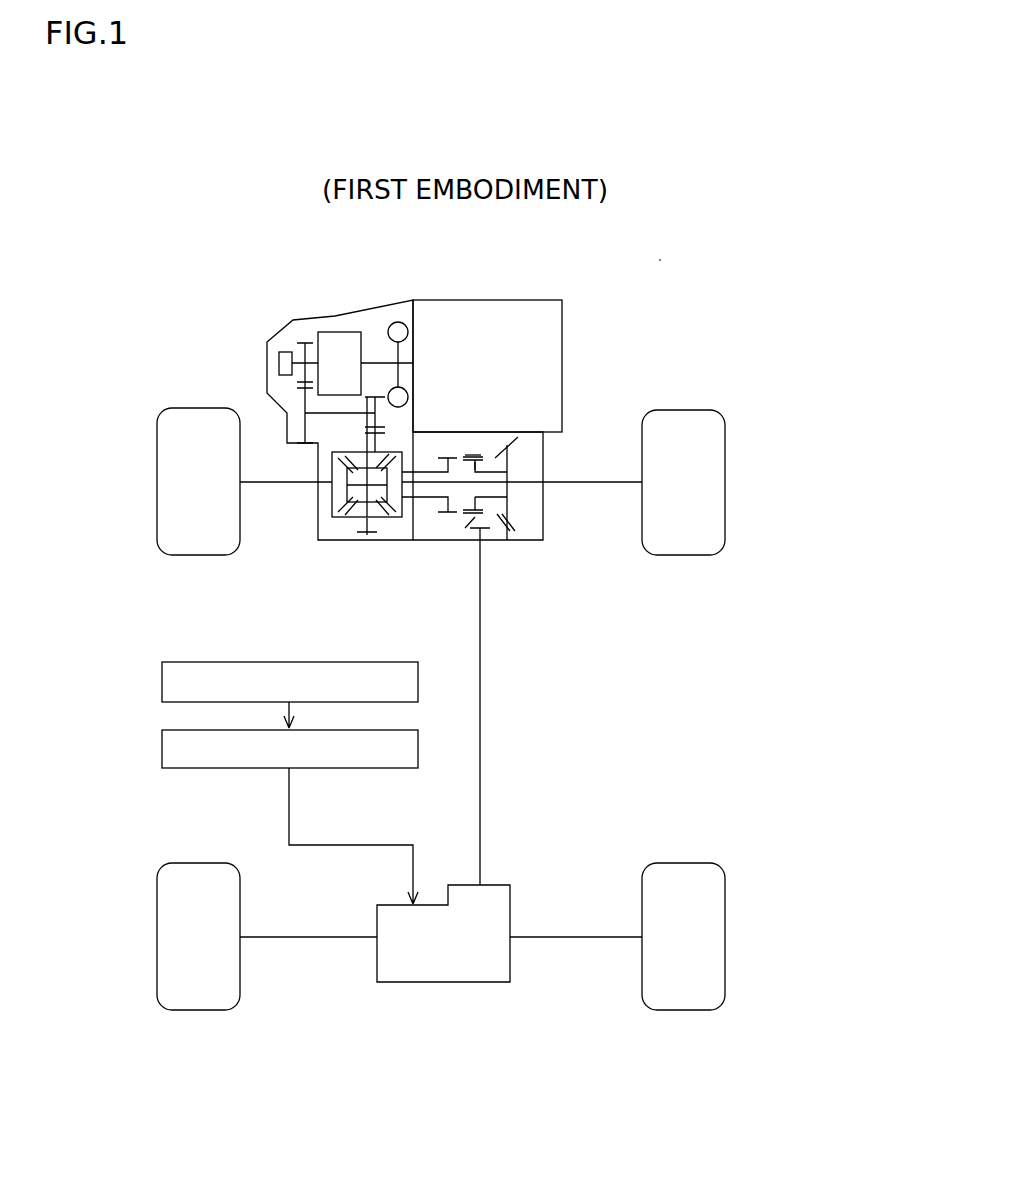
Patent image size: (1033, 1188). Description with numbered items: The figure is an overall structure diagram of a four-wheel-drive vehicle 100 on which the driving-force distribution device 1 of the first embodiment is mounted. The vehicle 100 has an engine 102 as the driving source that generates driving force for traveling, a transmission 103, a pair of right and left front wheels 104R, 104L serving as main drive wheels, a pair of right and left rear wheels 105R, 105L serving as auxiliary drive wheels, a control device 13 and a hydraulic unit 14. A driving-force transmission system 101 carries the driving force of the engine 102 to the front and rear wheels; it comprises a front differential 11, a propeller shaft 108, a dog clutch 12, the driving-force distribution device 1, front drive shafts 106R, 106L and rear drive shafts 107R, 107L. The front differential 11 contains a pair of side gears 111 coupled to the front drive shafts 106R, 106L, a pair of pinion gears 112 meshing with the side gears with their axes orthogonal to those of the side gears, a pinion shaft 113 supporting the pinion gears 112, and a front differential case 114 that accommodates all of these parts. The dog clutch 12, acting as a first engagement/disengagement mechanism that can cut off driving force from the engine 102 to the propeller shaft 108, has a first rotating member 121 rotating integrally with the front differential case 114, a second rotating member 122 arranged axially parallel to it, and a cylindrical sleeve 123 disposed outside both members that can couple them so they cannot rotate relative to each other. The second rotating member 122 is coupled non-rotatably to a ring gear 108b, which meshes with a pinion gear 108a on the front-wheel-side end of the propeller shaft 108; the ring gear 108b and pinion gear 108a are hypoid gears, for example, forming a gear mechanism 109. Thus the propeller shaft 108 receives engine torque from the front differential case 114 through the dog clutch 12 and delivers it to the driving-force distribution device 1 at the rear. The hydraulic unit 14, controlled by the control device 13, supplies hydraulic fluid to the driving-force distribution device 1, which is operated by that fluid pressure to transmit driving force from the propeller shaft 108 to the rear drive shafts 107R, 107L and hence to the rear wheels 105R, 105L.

The four-wheel-drive vehicle 100 is at (633, 270).
The driving-force transmission system 101 is at (598, 384).
The engine 102 is at (465, 299).
The transmission 103 is at (310, 322).
The left front wheel 104L is at (159, 483).
The right front wheel 104R is at (727, 478).
The left front drive shaft 106L is at (292, 481).
The right front drive shaft 106R is at (600, 480).
The front differential 11 is at (320, 526).
The side gear 111 is at (350, 486).
The pinion gear 112 is at (373, 468).
The pinion shaft 113 is at (355, 490).
The front differential case 114 is at (361, 500).
The dog clutch 12 is at (451, 531).
The first rotating member 121 is at (450, 457).
The second rotating member 122 is at (477, 468).
The cylindrical sleeve 123 is at (483, 455).
The propeller shaft 108 is at (482, 676).
The pinion gear 108a is at (503, 516).
The ring gear 108b is at (508, 507).
The gear mechanism 109 is at (531, 536).
The control device 13 is at (172, 662).
The hydraulic unit 14 is at (172, 730).
The driving-force distribution device 1 is at (497, 885).
The left rear wheel 105L is at (157, 938).
The right rear wheel 105R is at (728, 938).
The left rear drive shaft 107L is at (332, 938).
The right rear drive shaft 107R is at (583, 940).